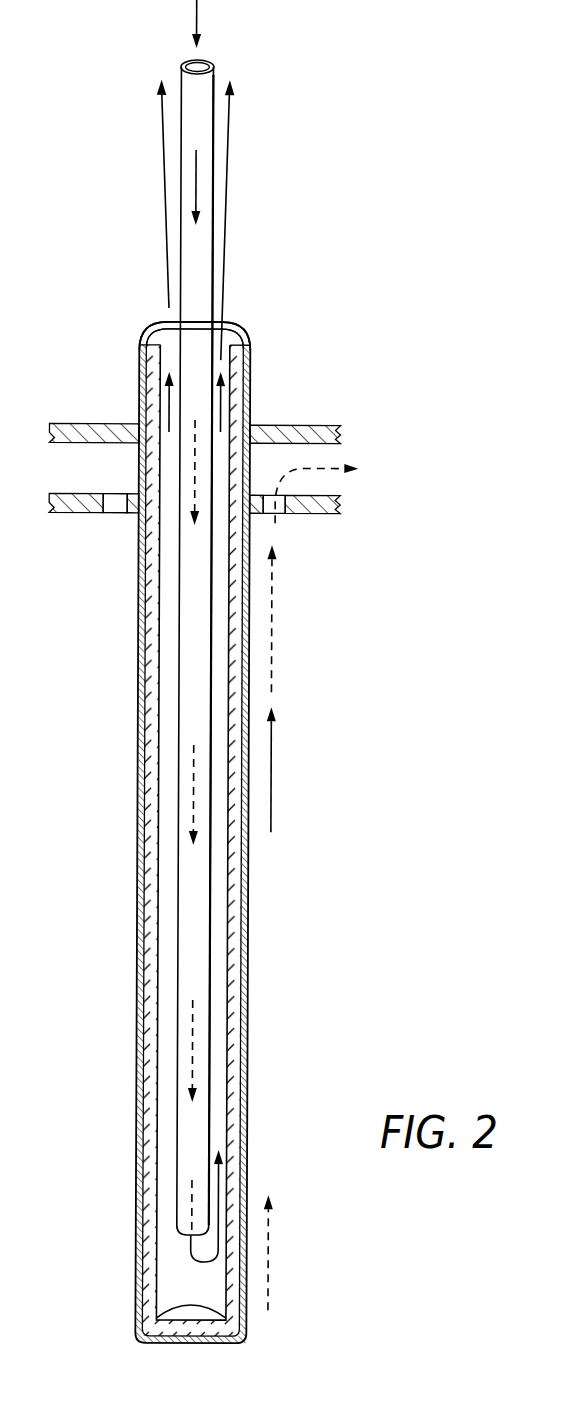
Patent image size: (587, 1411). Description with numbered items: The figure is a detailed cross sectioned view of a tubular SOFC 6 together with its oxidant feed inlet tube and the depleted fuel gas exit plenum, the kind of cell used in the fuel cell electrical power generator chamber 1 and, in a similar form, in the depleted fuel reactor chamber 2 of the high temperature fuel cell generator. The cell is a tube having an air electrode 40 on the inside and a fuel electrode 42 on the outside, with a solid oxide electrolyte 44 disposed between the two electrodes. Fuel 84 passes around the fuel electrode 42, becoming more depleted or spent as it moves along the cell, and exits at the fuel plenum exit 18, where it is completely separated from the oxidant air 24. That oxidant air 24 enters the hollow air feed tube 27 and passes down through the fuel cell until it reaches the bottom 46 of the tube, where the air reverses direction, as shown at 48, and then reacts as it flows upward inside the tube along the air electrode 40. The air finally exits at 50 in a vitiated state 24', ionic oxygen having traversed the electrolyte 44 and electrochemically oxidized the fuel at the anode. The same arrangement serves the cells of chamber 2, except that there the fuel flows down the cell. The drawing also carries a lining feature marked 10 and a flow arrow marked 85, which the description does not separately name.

The fuel cell electrical power generator chamber 1 is at (293, 999).
The depleted fuel reactor chamber 2 is at (140, 693).
The tubular SOFC 6 is at (234, 1115).
The insulating lining 10 is at (155, 1178).
The fuel plenum exit 18 is at (281, 453).
The oxidant air 24 is at (168, 617).
The vitiated oxidant air 24' is at (194, 256).
The hollow air feed tube 27 is at (214, 73).
The air electrode 40 is at (163, 345).
The fuel electrode 42 is at (250, 1032).
The solid oxide electrolyte 44 is at (244, 882).
The bottom of the tube 46 is at (175, 1295).
The air reversal 48 is at (191, 1258).
The air exit 50 is at (221, 360).
The fuel 84 is at (273, 785).
The outlet flow 85 is at (278, 556).